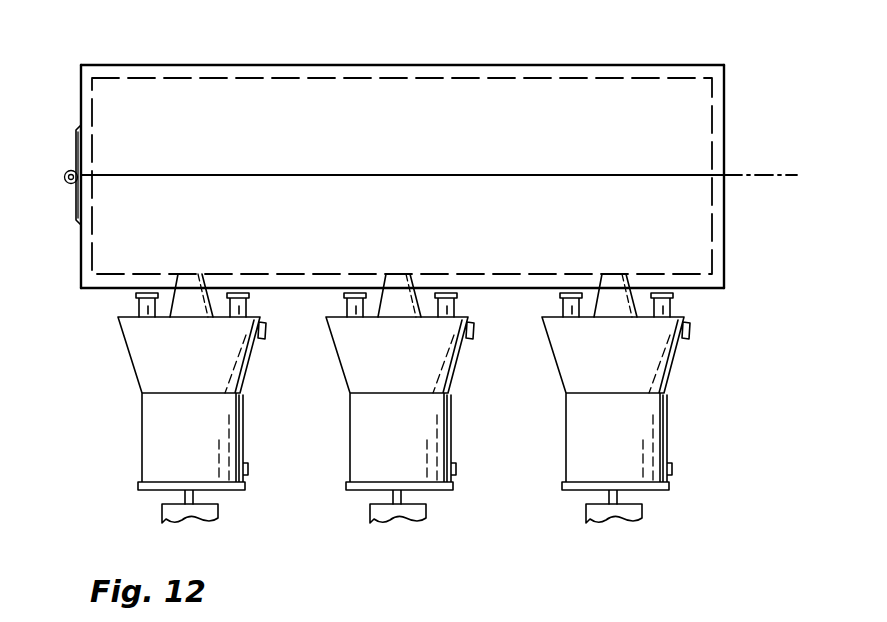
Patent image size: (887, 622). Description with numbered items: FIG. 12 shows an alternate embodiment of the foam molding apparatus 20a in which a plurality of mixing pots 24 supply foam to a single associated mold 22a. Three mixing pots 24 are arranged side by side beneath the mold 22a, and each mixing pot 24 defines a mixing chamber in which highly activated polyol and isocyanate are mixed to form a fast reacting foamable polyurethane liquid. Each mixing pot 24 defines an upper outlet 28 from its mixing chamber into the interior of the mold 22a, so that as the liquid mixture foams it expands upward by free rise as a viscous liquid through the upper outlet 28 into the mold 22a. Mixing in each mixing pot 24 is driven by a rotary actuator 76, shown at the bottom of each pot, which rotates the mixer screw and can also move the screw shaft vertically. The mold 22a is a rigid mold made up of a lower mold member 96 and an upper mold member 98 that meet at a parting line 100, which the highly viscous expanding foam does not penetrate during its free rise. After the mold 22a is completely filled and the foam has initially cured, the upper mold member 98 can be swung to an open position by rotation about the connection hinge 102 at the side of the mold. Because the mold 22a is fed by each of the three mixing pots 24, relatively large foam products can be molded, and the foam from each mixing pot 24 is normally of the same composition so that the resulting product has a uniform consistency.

The apparatus 20a is at (401, 408).
The mold 22a is at (738, 89).
The mixing pot 24 is at (132, 436).
The upper outlet 28 is at (137, 283).
The rotary actuator 76 is at (222, 510).
The lower mold member 96 is at (725, 270).
The upper mold member 98 is at (672, 68).
The parting line 100 is at (777, 177).
The connection hinge 102 is at (66, 183).